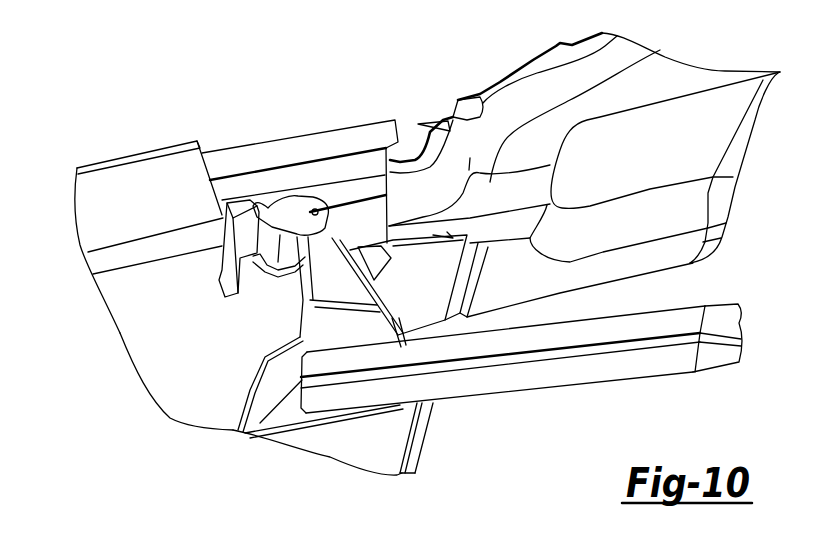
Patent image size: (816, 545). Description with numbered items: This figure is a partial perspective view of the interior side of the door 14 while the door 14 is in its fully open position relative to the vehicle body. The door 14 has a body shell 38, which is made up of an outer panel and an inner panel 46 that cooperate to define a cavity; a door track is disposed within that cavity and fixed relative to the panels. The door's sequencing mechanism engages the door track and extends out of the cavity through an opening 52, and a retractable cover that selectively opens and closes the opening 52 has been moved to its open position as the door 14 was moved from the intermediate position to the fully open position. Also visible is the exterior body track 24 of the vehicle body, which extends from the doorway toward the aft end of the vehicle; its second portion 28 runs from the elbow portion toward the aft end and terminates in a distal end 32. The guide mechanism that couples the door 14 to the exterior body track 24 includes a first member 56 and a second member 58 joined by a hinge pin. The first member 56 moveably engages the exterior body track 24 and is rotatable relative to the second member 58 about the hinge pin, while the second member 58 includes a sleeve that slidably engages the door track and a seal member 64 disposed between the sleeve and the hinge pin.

The door 14 is at (100, 156).
The exterior body track 24 is at (550, 401).
The second portion 28 is at (504, 382).
The distal end 32 is at (328, 405).
The body shell 38 is at (114, 338).
The inner panel 46 is at (226, 347).
The opening 52 is at (206, 153).
The first member 56 is at (343, 263).
The second member 58 is at (273, 207).
The seal member 64 is at (238, 274).